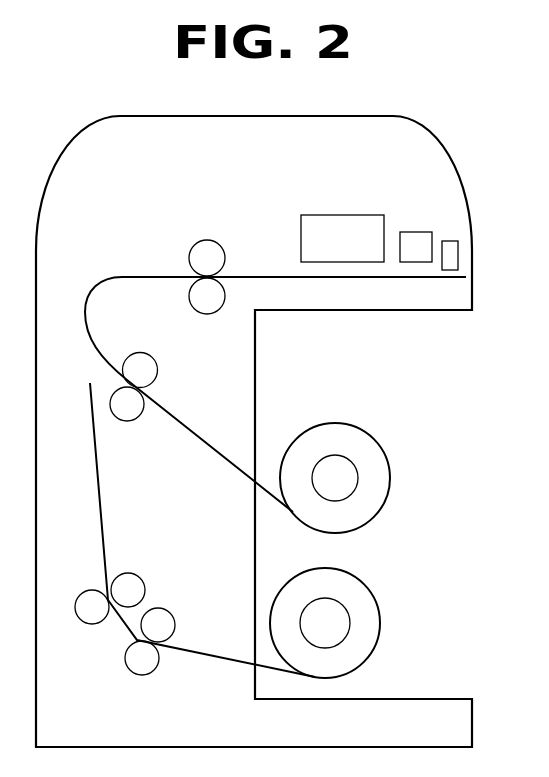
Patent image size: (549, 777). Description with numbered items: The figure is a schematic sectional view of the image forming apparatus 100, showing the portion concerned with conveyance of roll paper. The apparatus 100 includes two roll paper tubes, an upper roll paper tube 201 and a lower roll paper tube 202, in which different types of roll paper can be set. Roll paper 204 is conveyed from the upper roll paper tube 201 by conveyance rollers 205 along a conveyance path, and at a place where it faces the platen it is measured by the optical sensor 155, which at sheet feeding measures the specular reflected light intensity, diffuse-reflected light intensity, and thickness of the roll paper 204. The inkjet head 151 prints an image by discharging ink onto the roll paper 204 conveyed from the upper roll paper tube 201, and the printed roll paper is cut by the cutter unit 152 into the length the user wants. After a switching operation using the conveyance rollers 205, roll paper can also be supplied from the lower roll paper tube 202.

The image forming apparatus 100 is at (300, 116).
The inkjet head 151 is at (324, 215).
The cutter unit 152 is at (450, 241).
The optical sensor 155 is at (408, 232).
The upper roll paper tube 201 is at (391, 471).
The lower roll paper tube 202 is at (381, 611).
The roll paper 204 is at (138, 277).
The conveyance rollers 205 is at (207, 240).